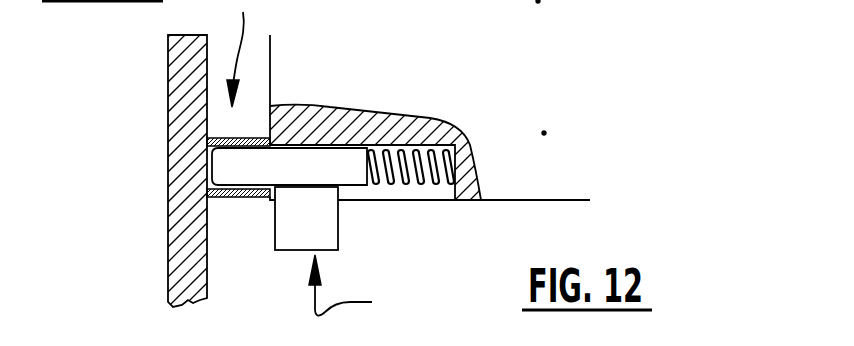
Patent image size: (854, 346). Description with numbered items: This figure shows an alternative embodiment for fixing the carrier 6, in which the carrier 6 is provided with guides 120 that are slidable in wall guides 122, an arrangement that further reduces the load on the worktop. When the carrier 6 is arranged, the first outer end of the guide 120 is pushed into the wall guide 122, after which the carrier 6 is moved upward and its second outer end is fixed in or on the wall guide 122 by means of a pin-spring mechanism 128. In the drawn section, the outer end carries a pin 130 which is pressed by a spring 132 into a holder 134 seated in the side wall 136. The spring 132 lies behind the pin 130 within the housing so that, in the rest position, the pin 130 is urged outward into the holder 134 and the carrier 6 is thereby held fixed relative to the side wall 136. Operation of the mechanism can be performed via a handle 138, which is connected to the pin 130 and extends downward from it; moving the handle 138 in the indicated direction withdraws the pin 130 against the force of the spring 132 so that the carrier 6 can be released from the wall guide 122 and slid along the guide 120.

The carrier 6 is at (544, 133).
The guide 120 is at (596, 9).
The wall guide 122 is at (236, 53).
The pin-spring mechanism 128 is at (360, 285).
The pin 130 is at (320, 170).
The spring 132 is at (430, 167).
The holder 134 is at (247, 199).
The side wall 136 is at (185, 232).
The handle 138 is at (325, 235).